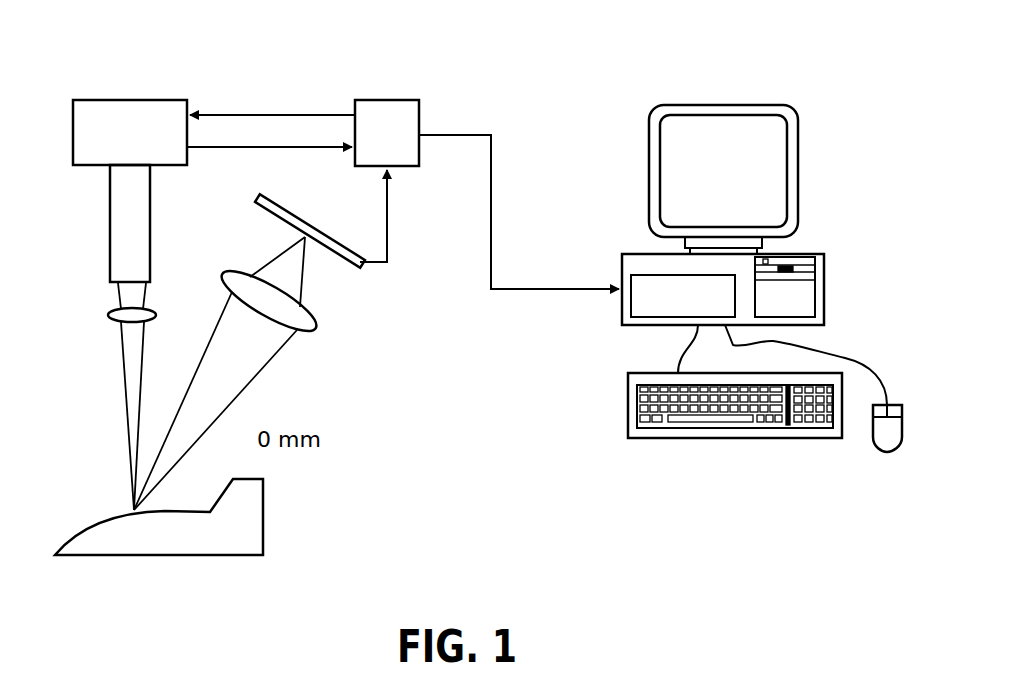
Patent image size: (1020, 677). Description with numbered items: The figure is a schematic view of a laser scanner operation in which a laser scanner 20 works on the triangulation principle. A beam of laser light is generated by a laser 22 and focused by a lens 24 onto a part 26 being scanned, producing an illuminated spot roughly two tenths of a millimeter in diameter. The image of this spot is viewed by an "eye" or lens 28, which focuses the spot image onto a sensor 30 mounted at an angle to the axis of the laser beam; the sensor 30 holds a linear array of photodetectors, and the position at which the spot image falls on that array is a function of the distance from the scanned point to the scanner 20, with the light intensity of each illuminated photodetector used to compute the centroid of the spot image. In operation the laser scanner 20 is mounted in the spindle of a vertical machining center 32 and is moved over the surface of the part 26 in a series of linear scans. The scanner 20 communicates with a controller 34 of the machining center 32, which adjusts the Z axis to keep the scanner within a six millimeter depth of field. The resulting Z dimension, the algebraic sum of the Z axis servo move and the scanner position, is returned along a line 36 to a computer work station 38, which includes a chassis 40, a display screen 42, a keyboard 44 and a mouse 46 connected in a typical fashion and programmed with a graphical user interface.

The laser scanner 20 is at (355, 405).
The laser 22 is at (150, 228).
The lens 24 is at (108, 315).
The part 26 is at (263, 523).
The lens 28 is at (313, 330).
The sensor 30 is at (327, 232).
The vertical machining center 32 is at (127, 100).
The controller 34 is at (385, 100).
The line 36 is at (453, 135).
The computer work station 38 is at (605, 171).
The chassis 40 is at (622, 267).
The display screen 42 is at (798, 145).
The keyboard 44 is at (725, 438).
The mouse 46 is at (877, 452).